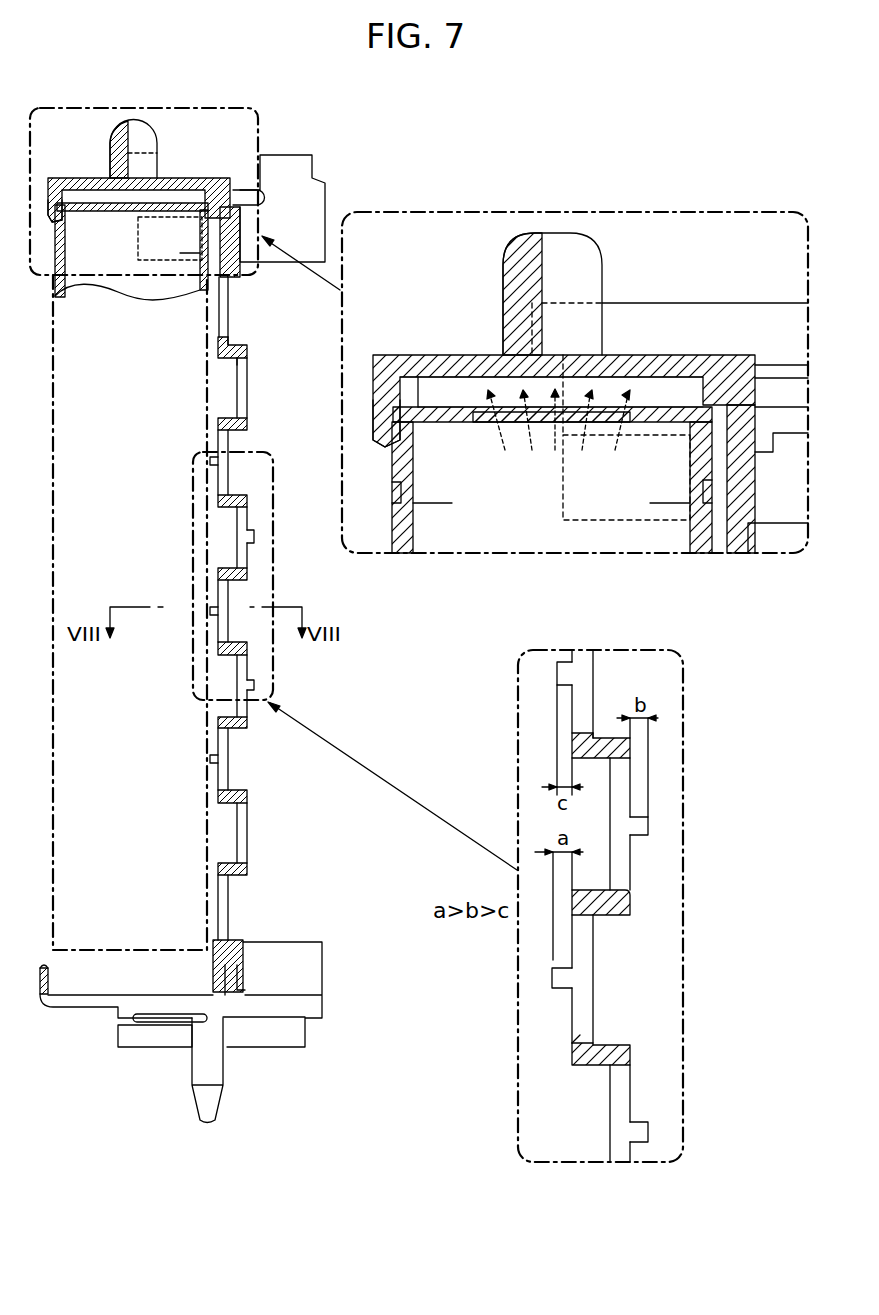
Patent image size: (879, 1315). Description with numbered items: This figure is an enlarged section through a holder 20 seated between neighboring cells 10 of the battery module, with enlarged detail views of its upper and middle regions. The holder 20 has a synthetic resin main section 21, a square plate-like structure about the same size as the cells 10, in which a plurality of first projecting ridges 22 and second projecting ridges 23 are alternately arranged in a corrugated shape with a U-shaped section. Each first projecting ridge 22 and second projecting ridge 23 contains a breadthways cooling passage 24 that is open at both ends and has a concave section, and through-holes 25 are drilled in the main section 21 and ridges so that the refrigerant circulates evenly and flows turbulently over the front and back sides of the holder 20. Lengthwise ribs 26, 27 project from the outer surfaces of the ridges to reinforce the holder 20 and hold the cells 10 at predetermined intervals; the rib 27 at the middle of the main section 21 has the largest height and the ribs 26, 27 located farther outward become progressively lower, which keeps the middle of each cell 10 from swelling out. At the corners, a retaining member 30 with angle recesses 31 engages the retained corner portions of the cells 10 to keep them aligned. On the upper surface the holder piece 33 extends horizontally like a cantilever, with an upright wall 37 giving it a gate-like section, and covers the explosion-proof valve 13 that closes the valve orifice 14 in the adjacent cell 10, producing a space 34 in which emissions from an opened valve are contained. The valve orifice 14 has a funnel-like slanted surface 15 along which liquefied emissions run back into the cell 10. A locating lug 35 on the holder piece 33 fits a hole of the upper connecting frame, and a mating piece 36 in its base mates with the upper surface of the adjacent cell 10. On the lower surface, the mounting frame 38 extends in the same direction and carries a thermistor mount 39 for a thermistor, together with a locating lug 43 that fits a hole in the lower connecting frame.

The cell 10 is at (58, 298).
The explosion-proof valve 13 is at (153, 205).
The valve orifice 14 is at (65, 253).
The slanted surface 15 is at (477, 397).
The holder 20 is at (227, 172).
The main section 21 is at (240, 278).
The first projecting ridge 22 is at (250, 350).
The second projecting ridge 23 is at (220, 428).
The cooling passage 24 is at (233, 393).
The through-hole 25 is at (233, 372).
The rib 26 is at (255, 535).
The rib 27 is at (217, 462).
The retaining member 30 is at (326, 160).
The angle recess 31 is at (196, 199).
The holder piece 33 is at (93, 178).
The space 34 is at (187, 196).
The locating lug 35 is at (120, 126).
The mating piece 36 is at (246, 193).
The upright wall 37 is at (47, 186).
The mounting frame 38 is at (105, 1000).
The thermistor mount 39 is at (177, 1040).
The locating lug 43 is at (223, 1077).